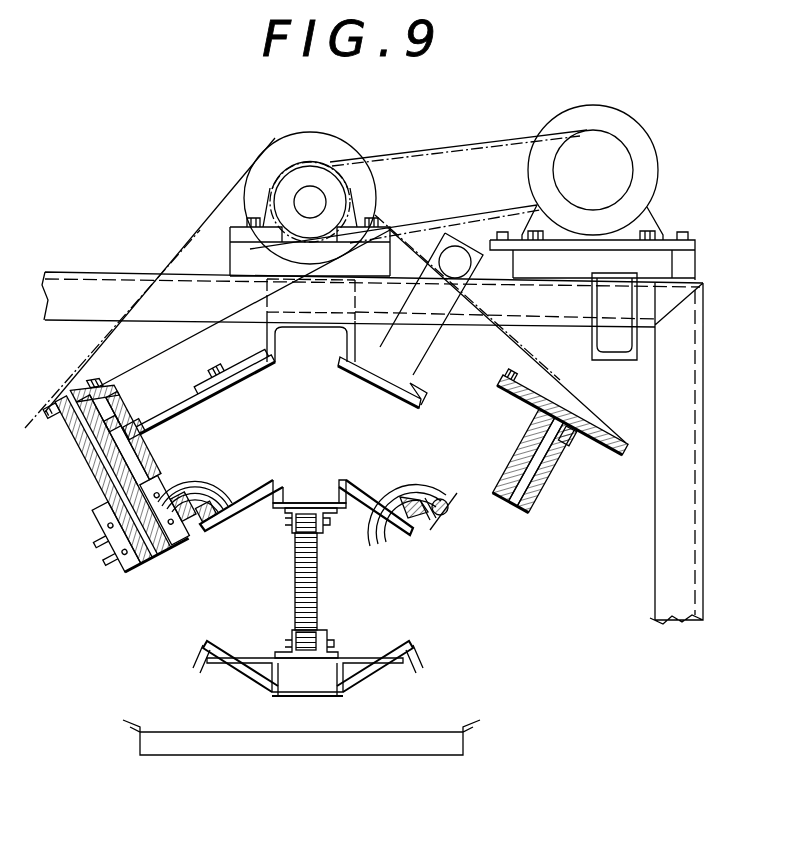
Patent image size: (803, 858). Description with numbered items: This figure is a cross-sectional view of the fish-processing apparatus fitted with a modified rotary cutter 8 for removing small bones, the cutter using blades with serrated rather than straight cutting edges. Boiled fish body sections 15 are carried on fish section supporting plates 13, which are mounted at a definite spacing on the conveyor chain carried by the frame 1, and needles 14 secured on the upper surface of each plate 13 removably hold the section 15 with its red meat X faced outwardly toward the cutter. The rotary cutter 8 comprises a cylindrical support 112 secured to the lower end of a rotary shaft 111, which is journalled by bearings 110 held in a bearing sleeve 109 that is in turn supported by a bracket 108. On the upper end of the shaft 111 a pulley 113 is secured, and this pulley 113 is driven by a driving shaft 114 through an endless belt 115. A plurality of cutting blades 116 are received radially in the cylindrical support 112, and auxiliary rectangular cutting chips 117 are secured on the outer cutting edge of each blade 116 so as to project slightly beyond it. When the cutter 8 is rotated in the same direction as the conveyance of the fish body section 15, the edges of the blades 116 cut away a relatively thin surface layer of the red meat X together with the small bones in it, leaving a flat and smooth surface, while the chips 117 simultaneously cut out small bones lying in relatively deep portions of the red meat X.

The frame 1 is at (103, 287).
The rotary cutter 8 is at (98, 497).
The fish section supporting plate 13 is at (215, 520).
The needles 14 is at (228, 506).
The fish body section 15 is at (205, 490).
The bracket 108 is at (172, 418).
The bearing sleeve 109 is at (85, 465).
The bearings 110 is at (87, 445).
The rotary shaft 111 is at (105, 462).
The cylindrical support 112 is at (143, 557).
The pulley 113 is at (45, 408).
The driving shaft 114 is at (312, 197).
The endless belt 115 is at (230, 187).
The cutting blades 116 is at (133, 568).
The auxiliary rectangular cutting chips 117 is at (108, 553).
The red meat X is at (445, 510).